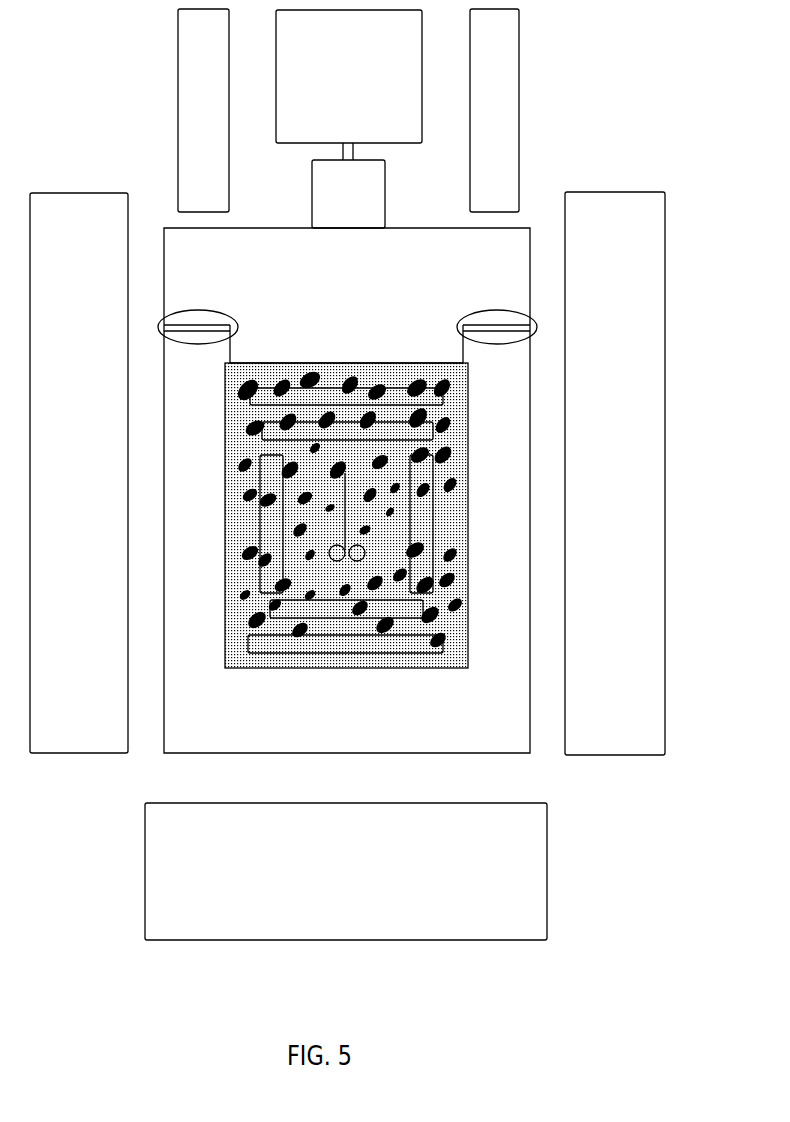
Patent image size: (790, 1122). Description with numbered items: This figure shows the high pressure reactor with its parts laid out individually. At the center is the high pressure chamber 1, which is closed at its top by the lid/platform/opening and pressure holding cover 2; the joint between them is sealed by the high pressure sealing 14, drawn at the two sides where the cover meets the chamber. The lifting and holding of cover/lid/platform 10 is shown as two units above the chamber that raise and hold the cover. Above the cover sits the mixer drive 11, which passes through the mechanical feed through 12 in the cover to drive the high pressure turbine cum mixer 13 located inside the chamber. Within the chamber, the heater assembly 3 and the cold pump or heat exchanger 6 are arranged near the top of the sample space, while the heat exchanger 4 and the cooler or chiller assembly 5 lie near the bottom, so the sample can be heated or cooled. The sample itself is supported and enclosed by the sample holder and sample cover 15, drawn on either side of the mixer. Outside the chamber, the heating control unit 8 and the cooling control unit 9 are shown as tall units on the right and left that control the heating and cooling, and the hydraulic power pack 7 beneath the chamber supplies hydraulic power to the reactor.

The high pressure chamber 1 is at (347, 539).
The lid/platform/opening and pressure holding cover 2 is at (347, 276).
The heater assembly 3 is at (346, 396).
The heat exchanger 4 is at (346, 609).
The cooler or chiller assembly 5 is at (345, 644).
The cold pump or heat exchanger 6 is at (347, 431).
The hydraulic power pack 7 is at (346, 871).
The heating control unit 8 is at (615, 473).
The cooling control unit 9 is at (79, 473).
The lifting and holding of cover/lid/platform 10 is at (348, 110).
The mixer drive 11 is at (349, 76).
The mechanical feed through 12 is at (348, 185).
The high pressure turbine cum mixer 13 is at (350, 517).
The high pressure sealing 14 is at (347, 342).
The sample holder and sample cover 15 is at (346, 524).